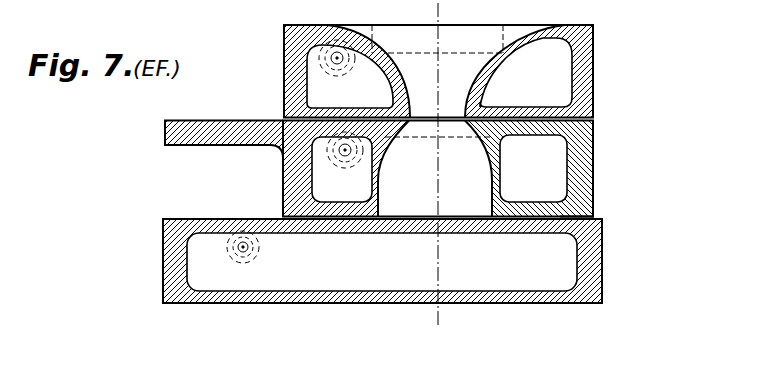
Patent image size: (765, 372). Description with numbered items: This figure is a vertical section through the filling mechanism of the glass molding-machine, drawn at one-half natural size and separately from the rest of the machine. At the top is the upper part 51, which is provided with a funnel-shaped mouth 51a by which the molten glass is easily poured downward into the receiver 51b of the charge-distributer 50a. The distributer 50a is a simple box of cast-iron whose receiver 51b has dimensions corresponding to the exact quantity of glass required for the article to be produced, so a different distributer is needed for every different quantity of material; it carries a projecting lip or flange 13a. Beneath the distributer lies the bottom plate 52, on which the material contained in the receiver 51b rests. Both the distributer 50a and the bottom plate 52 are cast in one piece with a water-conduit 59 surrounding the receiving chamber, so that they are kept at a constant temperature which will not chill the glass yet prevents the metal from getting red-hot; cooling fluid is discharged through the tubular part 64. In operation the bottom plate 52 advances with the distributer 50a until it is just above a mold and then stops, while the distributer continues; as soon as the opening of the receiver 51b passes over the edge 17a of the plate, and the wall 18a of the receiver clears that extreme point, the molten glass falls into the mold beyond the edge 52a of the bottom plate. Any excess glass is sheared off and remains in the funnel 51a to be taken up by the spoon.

The upper part 51 is at (286, 46).
The funnel-shaped mouth 51a is at (446, 71).
The receiver 51b is at (438, 169).
The charge-distributer 50a is at (594, 158).
The flange arm 13a is at (189, 120).
The curved wall 18a is at (379, 207).
The edge of the bottom plate 17a is at (598, 217).
The bottom plate 52 is at (365, 261).
The edge of the bottom plate 52a is at (602, 261).
The water-conduit 59 is at (382, 164).
The tubular part 64 is at (283, 117).